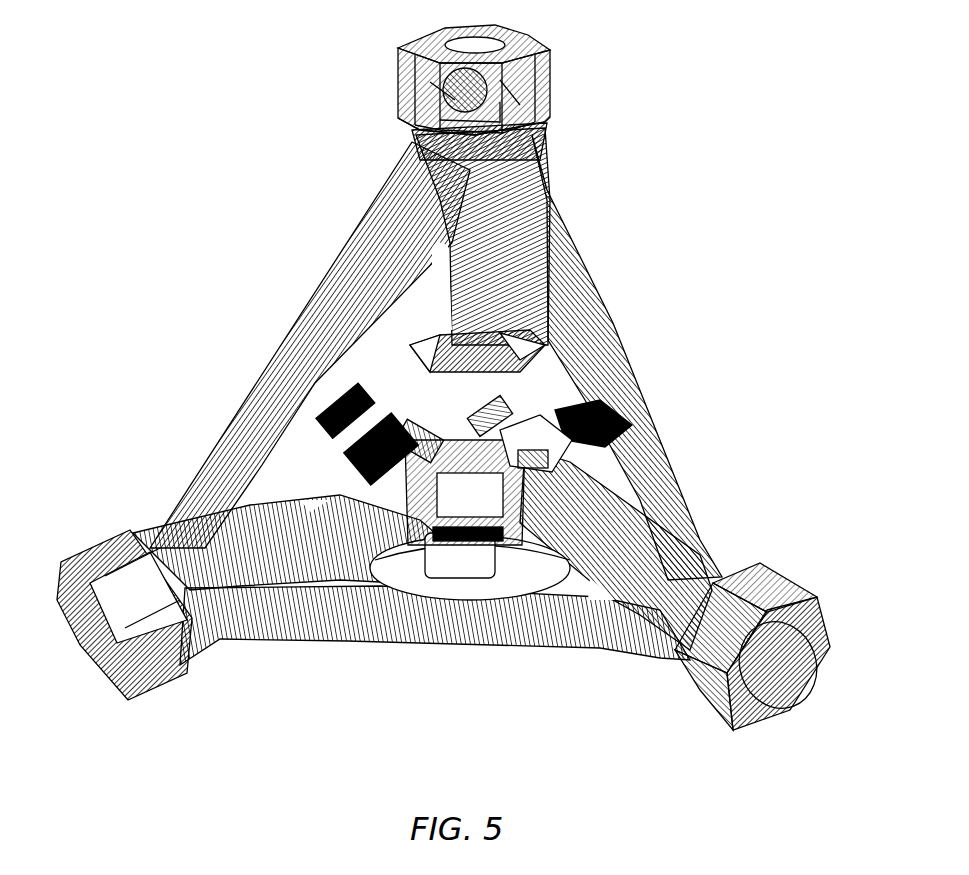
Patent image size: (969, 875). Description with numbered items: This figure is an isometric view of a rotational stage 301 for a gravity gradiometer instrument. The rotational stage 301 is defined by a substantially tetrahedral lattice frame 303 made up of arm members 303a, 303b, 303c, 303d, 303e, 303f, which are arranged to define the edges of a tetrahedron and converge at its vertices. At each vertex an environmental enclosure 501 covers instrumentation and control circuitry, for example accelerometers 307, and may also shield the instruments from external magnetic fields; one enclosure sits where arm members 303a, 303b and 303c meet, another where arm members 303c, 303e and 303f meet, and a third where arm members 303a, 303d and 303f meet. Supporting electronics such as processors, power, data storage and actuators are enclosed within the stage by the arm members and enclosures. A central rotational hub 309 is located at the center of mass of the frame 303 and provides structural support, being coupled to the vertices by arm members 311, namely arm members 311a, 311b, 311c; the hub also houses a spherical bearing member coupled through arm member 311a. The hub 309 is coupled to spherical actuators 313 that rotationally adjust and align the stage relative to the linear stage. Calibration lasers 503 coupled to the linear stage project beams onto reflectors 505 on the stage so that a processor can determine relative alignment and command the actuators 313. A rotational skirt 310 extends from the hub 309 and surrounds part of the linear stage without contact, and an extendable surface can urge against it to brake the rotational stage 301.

The rotational stage 301 is at (446, 366).
The tetrahedral lattice frame 303 is at (431, 412).
The arm member 303a is at (362, 240).
The arm member 303b is at (566, 258).
The arm member 303c is at (613, 328).
The arm member 303d is at (310, 640).
The arm member 303e is at (633, 520).
The arm member 303f is at (425, 645).
The accelerometers 307 is at (446, 366).
The central rotational hub 309 is at (465, 492).
The rotational skirt 310 is at (522, 565).
The arm members 311 is at (442, 483).
The arm member 311a is at (449, 294).
The arm member 311b is at (592, 573).
The arm member 311c is at (327, 497).
The spherical actuators 313 is at (397, 407).
The environmental enclosure 501 is at (446, 366).
The calibration lasers 503 is at (330, 398).
The reflectors 505 is at (438, 335).